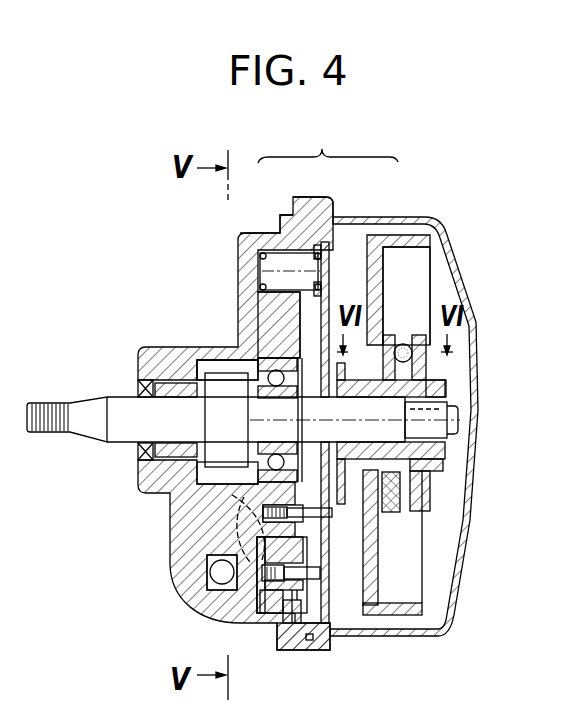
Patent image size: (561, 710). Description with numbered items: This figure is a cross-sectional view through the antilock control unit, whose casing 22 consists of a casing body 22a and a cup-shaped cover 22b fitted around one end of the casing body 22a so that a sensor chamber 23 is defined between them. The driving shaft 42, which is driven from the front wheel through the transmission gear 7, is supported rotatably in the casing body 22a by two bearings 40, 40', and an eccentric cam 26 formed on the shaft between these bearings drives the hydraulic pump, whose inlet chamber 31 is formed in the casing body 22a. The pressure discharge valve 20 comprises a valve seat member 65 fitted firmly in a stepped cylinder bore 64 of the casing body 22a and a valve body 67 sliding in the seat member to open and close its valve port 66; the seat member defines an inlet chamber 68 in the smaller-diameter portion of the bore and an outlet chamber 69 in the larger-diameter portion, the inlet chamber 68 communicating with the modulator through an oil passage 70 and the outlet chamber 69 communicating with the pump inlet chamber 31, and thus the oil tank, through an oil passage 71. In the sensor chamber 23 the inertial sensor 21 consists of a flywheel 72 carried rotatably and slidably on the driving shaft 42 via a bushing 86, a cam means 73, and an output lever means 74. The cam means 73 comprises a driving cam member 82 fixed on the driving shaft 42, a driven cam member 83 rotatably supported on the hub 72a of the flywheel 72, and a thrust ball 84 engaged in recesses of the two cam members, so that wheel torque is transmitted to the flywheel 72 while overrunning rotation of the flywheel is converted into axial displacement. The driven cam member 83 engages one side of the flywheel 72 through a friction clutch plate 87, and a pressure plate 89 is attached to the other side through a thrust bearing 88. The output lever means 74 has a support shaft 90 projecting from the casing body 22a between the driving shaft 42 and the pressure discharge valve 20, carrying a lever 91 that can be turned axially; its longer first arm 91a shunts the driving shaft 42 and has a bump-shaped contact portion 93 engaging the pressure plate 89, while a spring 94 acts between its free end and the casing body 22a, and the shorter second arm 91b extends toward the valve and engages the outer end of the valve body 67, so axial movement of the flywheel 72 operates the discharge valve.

The transmission gear 7 is at (432, 210).
The pressure discharge valve 20 is at (220, 612).
The inertial sensor 21 is at (444, 274).
The casing 22 is at (328, 141).
The casing body 22a is at (267, 231).
The cup-shaped cover 22b is at (360, 216).
The sensor chamber 23 is at (456, 297).
The eccentric cam 26 is at (224, 373).
The inlet chamber 31 is at (226, 420).
The bearing 40 is at (242, 422).
The bearing 40' is at (276, 420).
The driving shaft 42 is at (118, 398).
The stepped cylinder bore 64 is at (256, 552).
The valve seat member 65 is at (293, 624).
The valve port 66 is at (254, 568).
The valve body 67 is at (266, 618).
The inlet chamber 68 is at (212, 550).
The outlet chamber 69 is at (262, 600).
The oil passage 70 is at (207, 570).
The oil passage 71 is at (243, 500).
The flywheel 72 is at (384, 270).
The hub 72a is at (412, 468).
The cam means 73 is at (400, 340).
The output lever means 74 is at (337, 271).
The driving cam member 82 is at (420, 503).
The driven cam member 83 is at (397, 513).
The thrust ball 84 is at (413, 350).
The bushing 86 is at (407, 432).
The friction clutch plate 87 is at (380, 480).
The thrust bearing 88 is at (351, 382).
The pressure plate 89 is at (332, 515).
The support shaft 90 is at (323, 518).
The lever 91 is at (340, 284).
The first arm 91a is at (325, 303).
The second arm 91b is at (325, 600).
The contact portion 93 is at (340, 423).
The spring 94 is at (258, 256).